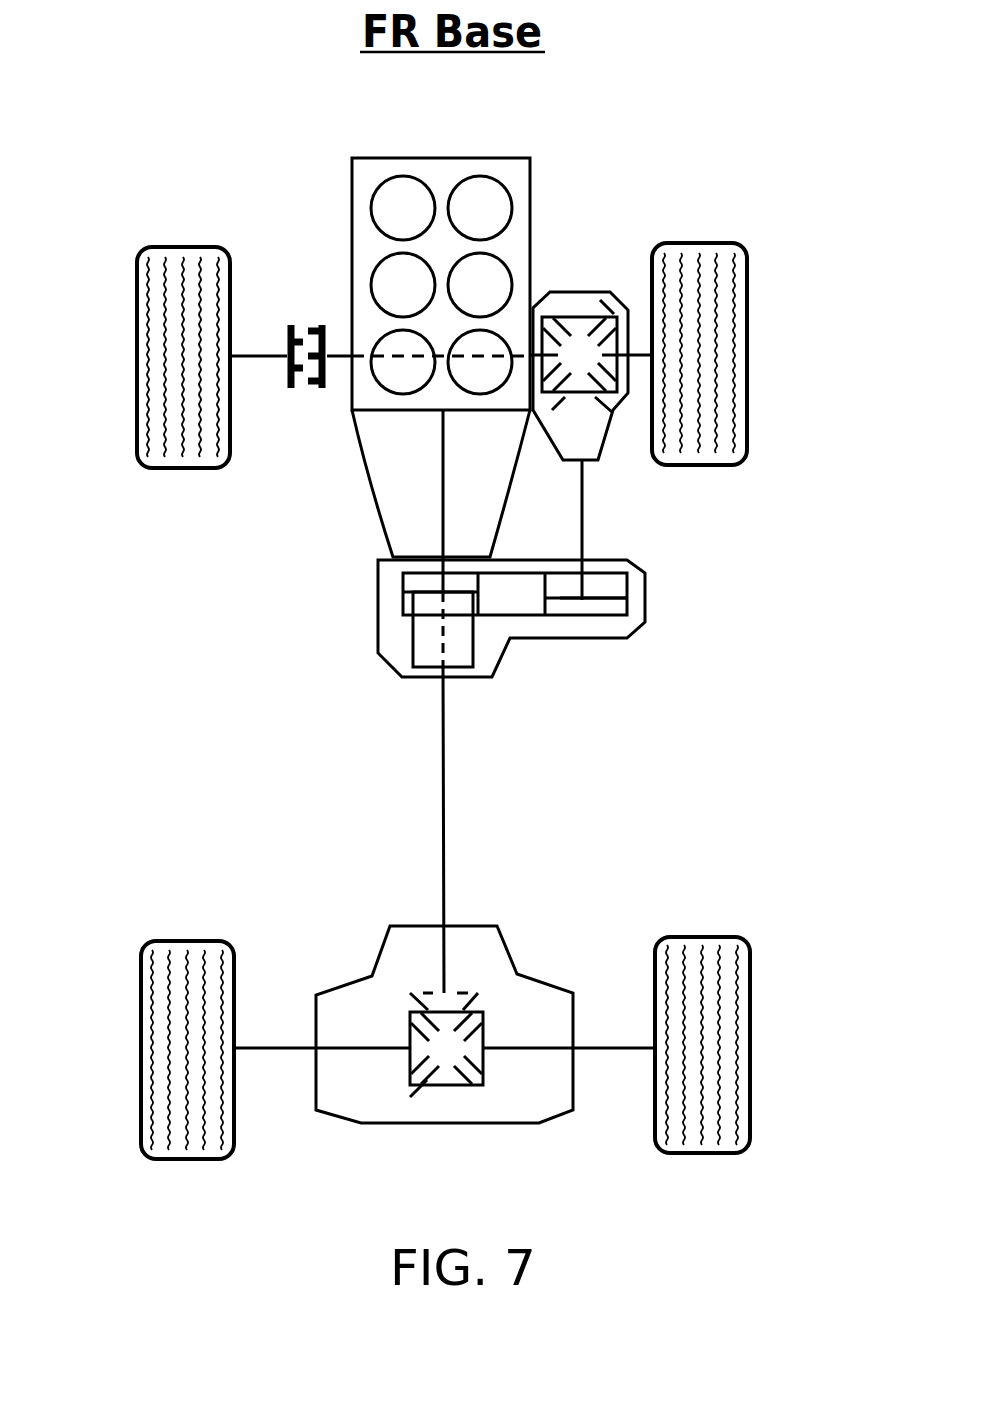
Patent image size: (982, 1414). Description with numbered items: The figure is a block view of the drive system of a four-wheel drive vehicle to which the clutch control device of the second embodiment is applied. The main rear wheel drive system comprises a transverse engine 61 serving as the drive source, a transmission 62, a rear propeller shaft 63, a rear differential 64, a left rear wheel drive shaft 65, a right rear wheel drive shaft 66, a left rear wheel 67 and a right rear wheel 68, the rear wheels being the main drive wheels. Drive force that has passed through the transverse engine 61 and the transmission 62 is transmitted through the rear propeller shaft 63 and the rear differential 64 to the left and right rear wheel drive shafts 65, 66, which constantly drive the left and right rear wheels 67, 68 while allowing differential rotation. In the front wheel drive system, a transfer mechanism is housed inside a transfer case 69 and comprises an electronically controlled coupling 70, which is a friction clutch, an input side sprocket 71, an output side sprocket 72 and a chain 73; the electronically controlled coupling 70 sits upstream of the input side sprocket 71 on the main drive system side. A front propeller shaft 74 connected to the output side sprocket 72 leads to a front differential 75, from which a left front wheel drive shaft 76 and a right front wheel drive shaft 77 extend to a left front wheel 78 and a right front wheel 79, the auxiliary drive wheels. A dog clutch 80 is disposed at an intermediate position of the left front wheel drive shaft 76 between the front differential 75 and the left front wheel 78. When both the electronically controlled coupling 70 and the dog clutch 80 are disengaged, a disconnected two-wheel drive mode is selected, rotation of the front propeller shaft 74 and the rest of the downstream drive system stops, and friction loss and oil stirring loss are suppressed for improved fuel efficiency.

The transverse engine 61 is at (452, 157).
The transmission 62 is at (381, 503).
The rear propeller shaft 63 is at (444, 831).
The rear differential 64 is at (460, 1095).
The left rear wheel drive shaft 65 is at (277, 1045).
The right rear wheel drive shaft 66 is at (606, 1045).
The left rear wheel 67 is at (178, 939).
The right rear wheel 68 is at (699, 937).
The transfer case 69 is at (572, 638).
The electronically controlled coupling 70 is at (400, 650).
The input side sprocket 71 is at (487, 592).
The output side sprocket 72 is at (540, 597).
The chain 73 is at (590, 620).
The front propeller shaft 74 is at (582, 500).
The front differential 75 is at (574, 305).
The left front wheel drive shaft 76 is at (336, 353).
The right front wheel drive shaft 77 is at (638, 350).
The left front wheel 78 is at (193, 247).
The right front wheel 79 is at (705, 243).
The dog clutch 80 is at (298, 310).